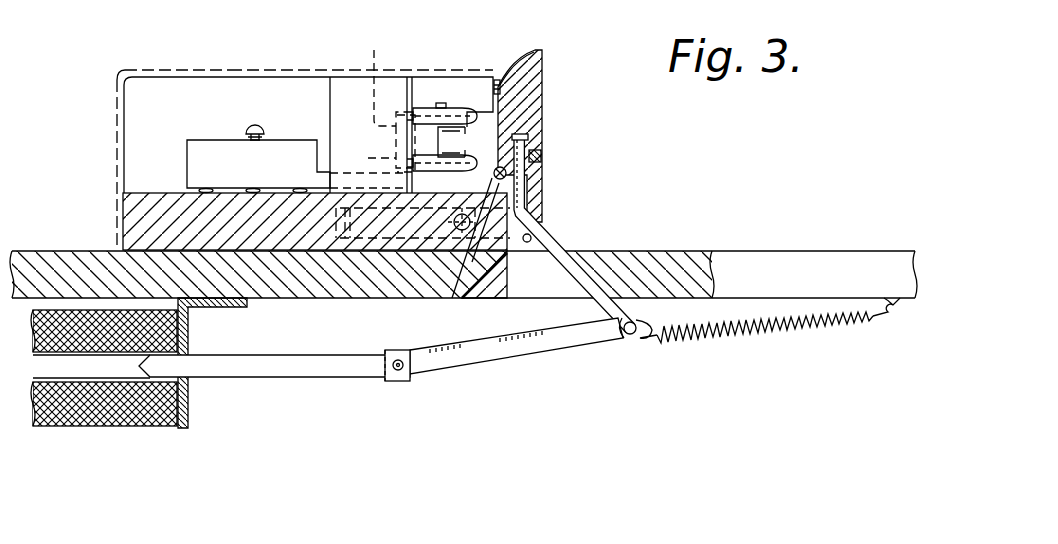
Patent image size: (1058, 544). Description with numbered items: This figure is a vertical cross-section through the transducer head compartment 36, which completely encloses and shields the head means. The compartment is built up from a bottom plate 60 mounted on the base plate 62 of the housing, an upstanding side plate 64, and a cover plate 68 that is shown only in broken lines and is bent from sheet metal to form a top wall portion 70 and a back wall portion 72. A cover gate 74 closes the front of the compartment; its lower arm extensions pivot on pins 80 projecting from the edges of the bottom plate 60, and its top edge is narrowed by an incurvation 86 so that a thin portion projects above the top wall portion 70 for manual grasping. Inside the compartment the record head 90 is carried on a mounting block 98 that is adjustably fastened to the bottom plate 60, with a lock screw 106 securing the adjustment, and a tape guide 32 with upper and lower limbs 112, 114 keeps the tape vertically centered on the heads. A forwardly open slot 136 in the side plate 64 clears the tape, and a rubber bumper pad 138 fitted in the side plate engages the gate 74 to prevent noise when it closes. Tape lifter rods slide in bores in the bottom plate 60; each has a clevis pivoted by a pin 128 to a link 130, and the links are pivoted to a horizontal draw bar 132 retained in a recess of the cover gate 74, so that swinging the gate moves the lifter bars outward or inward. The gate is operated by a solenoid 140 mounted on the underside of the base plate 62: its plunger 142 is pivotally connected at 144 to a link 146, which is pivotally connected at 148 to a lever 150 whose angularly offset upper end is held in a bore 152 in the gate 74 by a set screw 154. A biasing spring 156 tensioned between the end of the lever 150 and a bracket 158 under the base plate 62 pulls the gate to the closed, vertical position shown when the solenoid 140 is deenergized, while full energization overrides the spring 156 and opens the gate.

The pin 32 is at (463, 128).
The transducer head compartment 36 is at (117, 84).
The bottom plate 60 is at (300, 245).
The base plate 62 is at (57, 250).
The side plate 64 is at (210, 126).
The cover plate 68 is at (180, 68).
The top wall portion 70 is at (258, 68).
The cover side wall 72 is at (117, 143).
The cover gate 74 is at (545, 78).
The pin 80 is at (530, 243).
The incurvation 86 is at (522, 62).
The record head 90 is at (453, 140).
The mounting block 98 is at (187, 172).
The lock screw 106 is at (261, 127).
The upper limb 112 is at (466, 108).
The lower limb 114 is at (470, 163).
The pin 128 is at (462, 265).
The link 130 is at (487, 190).
The draw bar 132 is at (507, 173).
The forwardly open slot 136 is at (374, 70).
The rubber bumper pad 138 is at (498, 80).
The gate actuating solenoid 140 is at (110, 418).
The plunger 142 is at (285, 378).
The pivotal connection 144 is at (397, 382).
The link 146 is at (518, 352).
The pivotal connection 148 is at (630, 336).
The lever 150 is at (556, 243).
The bore 152 is at (529, 137).
The set screw 154 is at (542, 158).
The biasing spring 156 is at (758, 343).
The bracket 158 is at (900, 318).